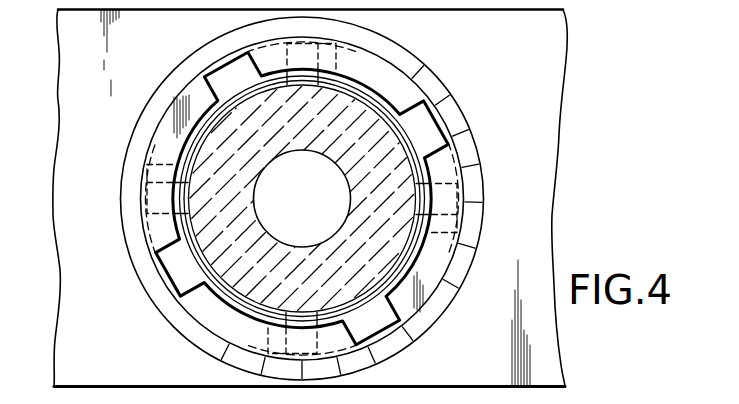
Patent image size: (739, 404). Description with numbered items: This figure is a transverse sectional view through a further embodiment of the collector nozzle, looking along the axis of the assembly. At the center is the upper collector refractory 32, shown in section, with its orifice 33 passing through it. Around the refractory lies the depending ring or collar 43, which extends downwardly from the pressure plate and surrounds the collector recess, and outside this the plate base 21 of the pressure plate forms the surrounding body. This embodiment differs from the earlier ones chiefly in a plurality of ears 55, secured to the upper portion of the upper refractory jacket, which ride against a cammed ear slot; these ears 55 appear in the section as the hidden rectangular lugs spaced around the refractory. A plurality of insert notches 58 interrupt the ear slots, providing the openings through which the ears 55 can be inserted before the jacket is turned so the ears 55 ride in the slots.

The plate base 21 is at (528, 207).
The upper collector refractory 32 is at (293, 122).
The orifice 33 is at (290, 187).
The depending ring or collar 43 is at (443, 297).
The ears 55 is at (320, 47).
The insert notches 58 is at (432, 124).